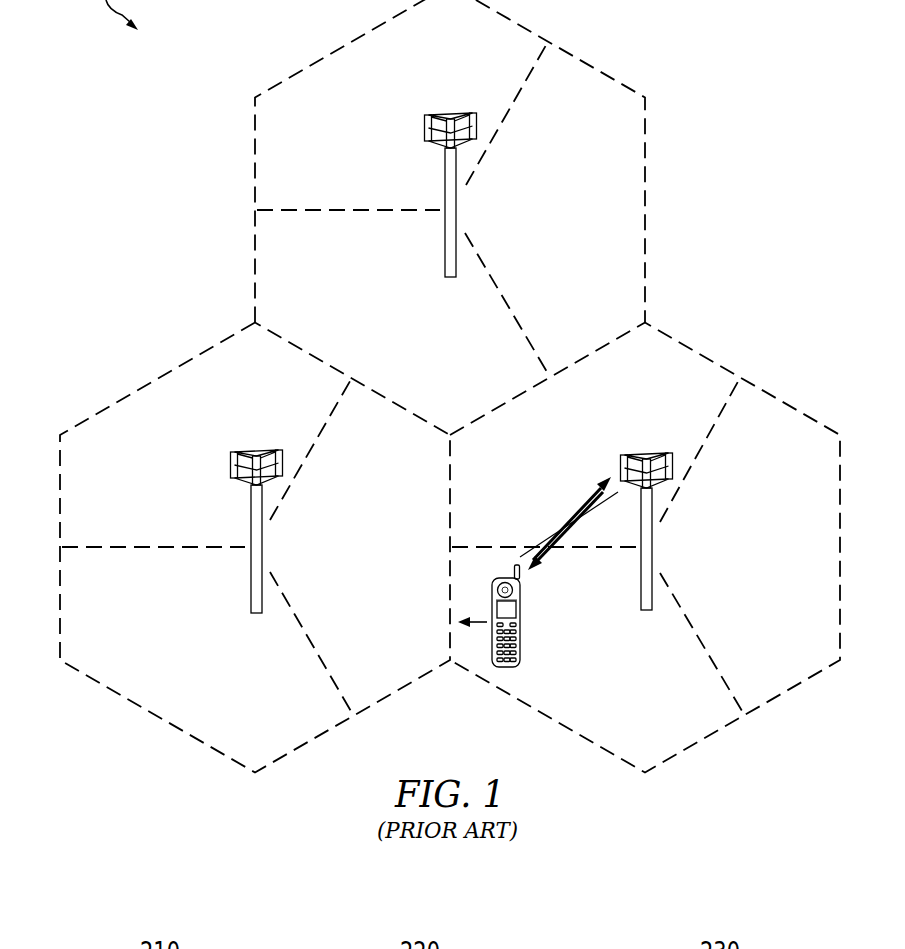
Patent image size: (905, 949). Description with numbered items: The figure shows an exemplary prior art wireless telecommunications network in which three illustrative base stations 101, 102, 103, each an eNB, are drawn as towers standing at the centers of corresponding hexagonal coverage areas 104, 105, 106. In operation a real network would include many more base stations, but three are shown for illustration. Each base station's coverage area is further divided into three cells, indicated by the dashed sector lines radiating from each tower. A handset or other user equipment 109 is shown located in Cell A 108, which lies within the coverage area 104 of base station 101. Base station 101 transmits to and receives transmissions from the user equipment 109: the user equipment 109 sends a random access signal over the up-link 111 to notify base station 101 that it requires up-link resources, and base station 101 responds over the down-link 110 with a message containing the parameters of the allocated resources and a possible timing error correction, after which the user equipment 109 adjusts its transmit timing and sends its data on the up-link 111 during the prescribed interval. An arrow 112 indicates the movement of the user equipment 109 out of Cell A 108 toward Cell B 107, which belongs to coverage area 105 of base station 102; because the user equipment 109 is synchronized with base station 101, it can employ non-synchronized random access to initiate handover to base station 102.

The base station 101 is at (653, 547).
The base station 102 is at (251, 573).
The base station 103 is at (446, 236).
The coverage area 104 is at (780, 697).
The coverage area 105 is at (160, 718).
The coverage area 106 is at (647, 210).
The Cell B 107 is at (404, 658).
The Cell A 108 is at (652, 727).
The user equipment 109 is at (521, 628).
The down-link 110 is at (573, 545).
The up-link 111 is at (585, 499).
The handoff direction 112 is at (483, 623).